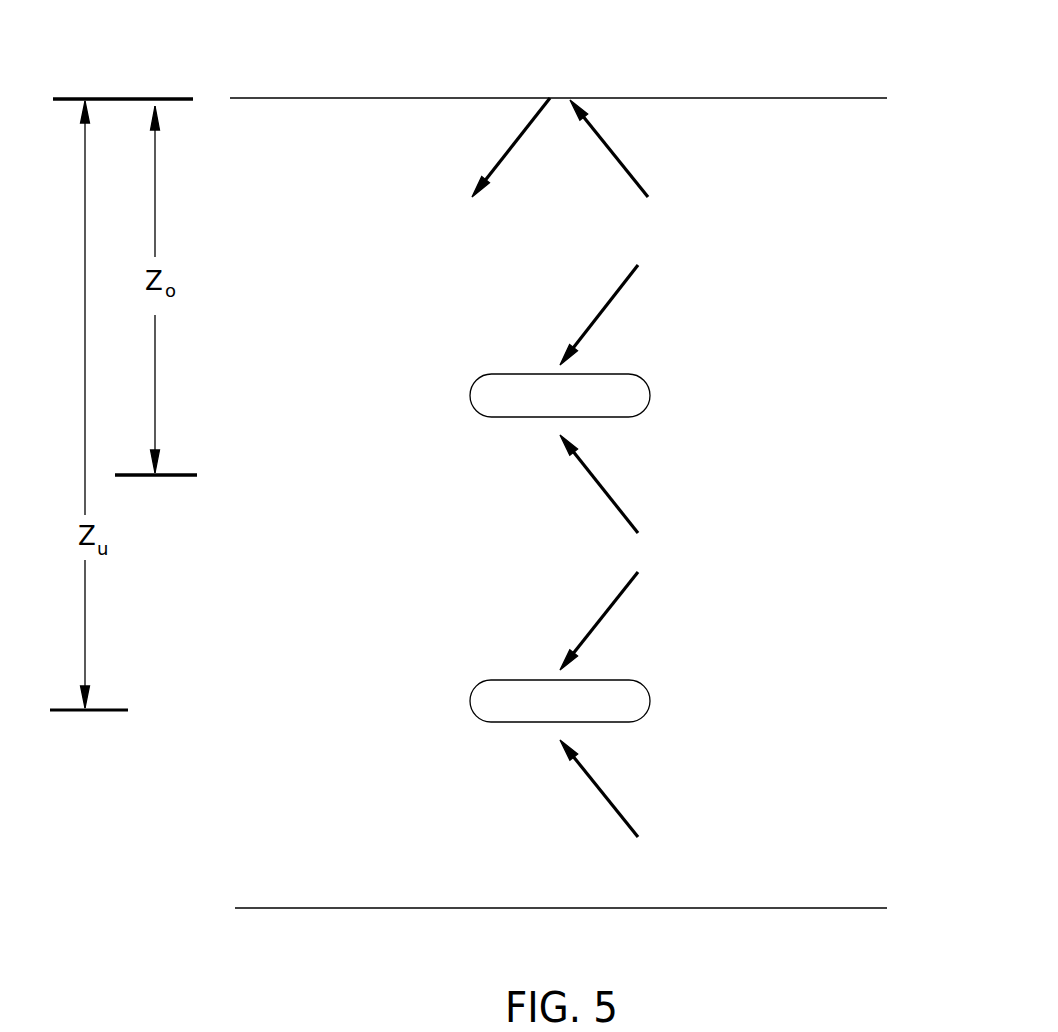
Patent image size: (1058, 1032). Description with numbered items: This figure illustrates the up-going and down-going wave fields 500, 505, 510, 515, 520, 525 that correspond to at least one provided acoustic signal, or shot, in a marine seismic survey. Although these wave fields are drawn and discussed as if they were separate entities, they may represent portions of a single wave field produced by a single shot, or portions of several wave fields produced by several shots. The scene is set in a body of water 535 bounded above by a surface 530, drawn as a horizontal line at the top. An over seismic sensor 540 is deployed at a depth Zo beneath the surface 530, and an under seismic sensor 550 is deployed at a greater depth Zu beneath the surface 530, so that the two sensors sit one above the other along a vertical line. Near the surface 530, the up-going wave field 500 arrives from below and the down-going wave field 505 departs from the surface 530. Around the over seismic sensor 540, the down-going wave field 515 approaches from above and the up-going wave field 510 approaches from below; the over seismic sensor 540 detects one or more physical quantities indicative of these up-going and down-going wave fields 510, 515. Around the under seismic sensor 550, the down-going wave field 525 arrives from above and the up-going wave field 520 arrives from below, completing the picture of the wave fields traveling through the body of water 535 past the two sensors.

The up-going wave field 500 is at (610, 146).
The down-going wave field 505 is at (508, 146).
The up-going wave field 510 is at (600, 482).
The down-going wave field 515 is at (601, 312).
The up-going wave field 520 is at (600, 790).
The down-going wave field 525 is at (605, 614).
The surface 530 is at (737, 97).
The body of water 535 is at (903, 397).
The over seismic sensor 540 is at (470, 393).
The under seismic sensor 550 is at (470, 702).